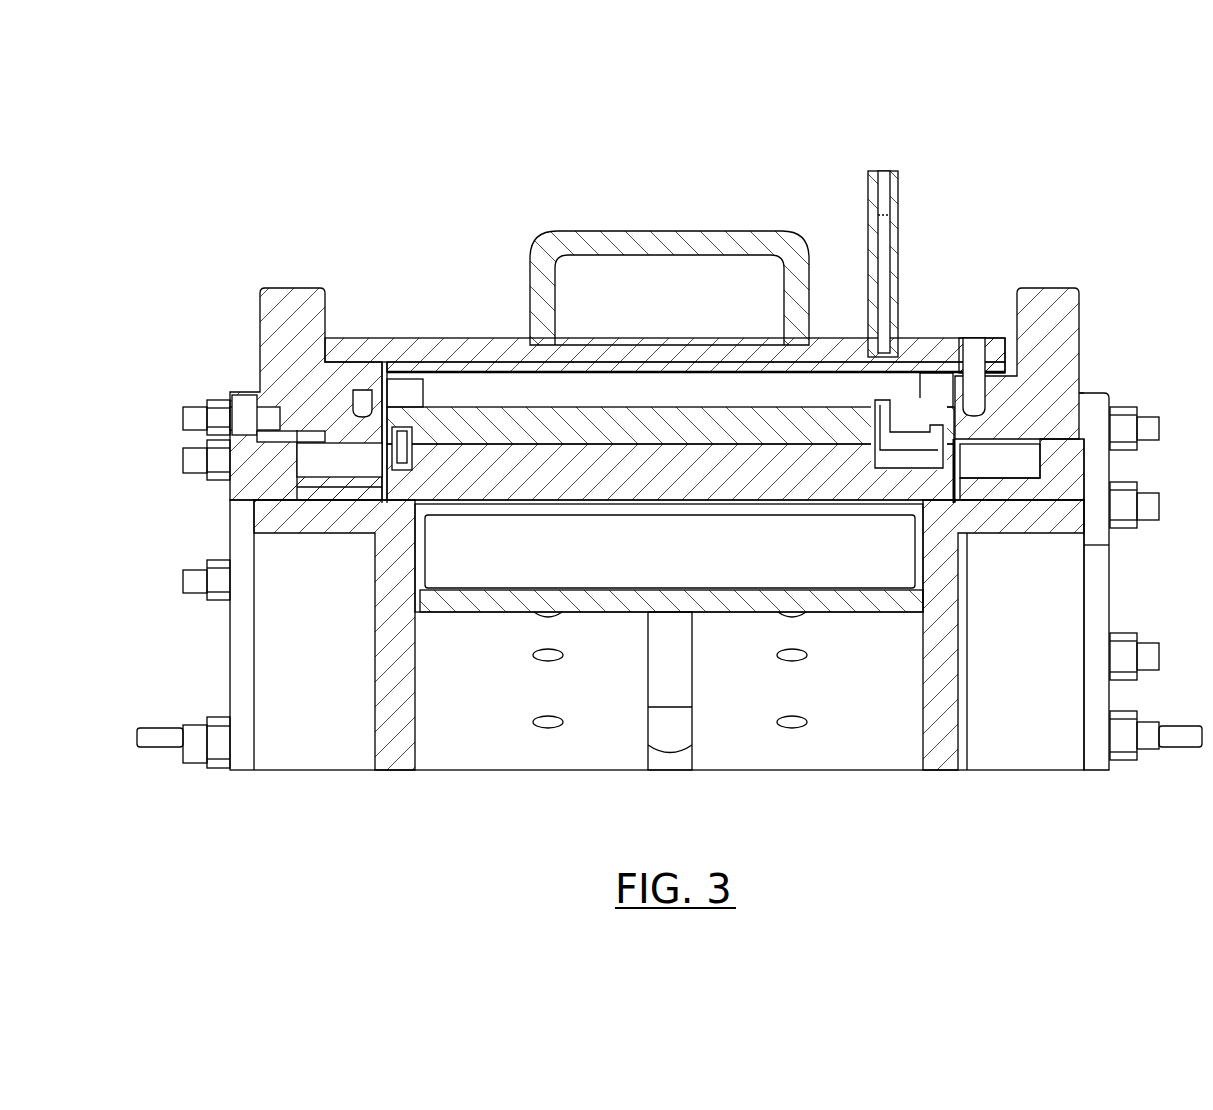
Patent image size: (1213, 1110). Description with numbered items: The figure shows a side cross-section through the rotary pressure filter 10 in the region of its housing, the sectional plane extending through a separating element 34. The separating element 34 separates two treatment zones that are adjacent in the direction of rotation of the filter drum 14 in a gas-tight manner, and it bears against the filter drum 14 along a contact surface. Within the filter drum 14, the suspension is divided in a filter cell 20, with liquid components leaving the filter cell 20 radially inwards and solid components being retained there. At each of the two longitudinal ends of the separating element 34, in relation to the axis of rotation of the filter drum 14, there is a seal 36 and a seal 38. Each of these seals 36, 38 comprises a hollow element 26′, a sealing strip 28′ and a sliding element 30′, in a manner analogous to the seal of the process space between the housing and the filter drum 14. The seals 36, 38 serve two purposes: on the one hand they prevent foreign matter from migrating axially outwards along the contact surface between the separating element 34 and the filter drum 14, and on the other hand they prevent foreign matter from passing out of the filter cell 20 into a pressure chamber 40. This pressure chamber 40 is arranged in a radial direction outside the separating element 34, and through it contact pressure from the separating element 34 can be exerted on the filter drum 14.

The rotary pressure filter 10 is at (652, 388).
The filter drum 14 is at (276, 510).
The filter cell 20 is at (445, 543).
The hollow element 26′ is at (336, 458).
The sealing strip 28′ is at (382, 488).
The sliding element 30′ is at (318, 486).
The separating element 34 is at (480, 477).
The seal 36 is at (311, 431).
The seal 38 is at (1028, 439).
The pressure chamber 40 is at (498, 395).